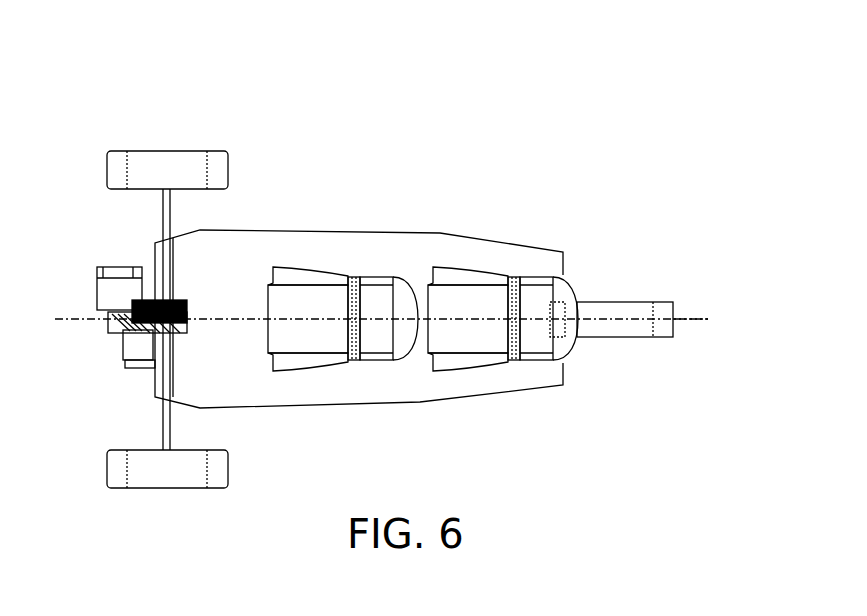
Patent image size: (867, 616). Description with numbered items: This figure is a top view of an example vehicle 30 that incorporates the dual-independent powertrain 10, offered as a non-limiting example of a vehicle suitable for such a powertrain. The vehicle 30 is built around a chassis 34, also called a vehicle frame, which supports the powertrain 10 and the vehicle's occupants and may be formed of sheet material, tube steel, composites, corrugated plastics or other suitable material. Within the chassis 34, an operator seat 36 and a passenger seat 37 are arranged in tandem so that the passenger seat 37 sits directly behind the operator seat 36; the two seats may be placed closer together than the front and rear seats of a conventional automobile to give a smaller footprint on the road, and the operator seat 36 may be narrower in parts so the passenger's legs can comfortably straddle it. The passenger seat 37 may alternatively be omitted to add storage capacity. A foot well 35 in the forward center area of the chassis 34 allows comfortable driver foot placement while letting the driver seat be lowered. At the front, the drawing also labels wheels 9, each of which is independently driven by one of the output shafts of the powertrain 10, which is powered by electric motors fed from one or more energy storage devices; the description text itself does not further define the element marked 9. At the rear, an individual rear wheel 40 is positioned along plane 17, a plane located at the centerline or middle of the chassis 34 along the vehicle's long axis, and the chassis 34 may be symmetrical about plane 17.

The wheel 9 is at (190, 148).
The powertrain 10 is at (127, 258).
The plane 17 is at (692, 318).
The vehicle 30 is at (378, 210).
The chassis 34 is at (437, 233).
The foot well 35 is at (218, 322).
The operator seat 36 is at (318, 363).
The passenger seat 37 is at (452, 363).
The rear wheel 40 is at (631, 300).